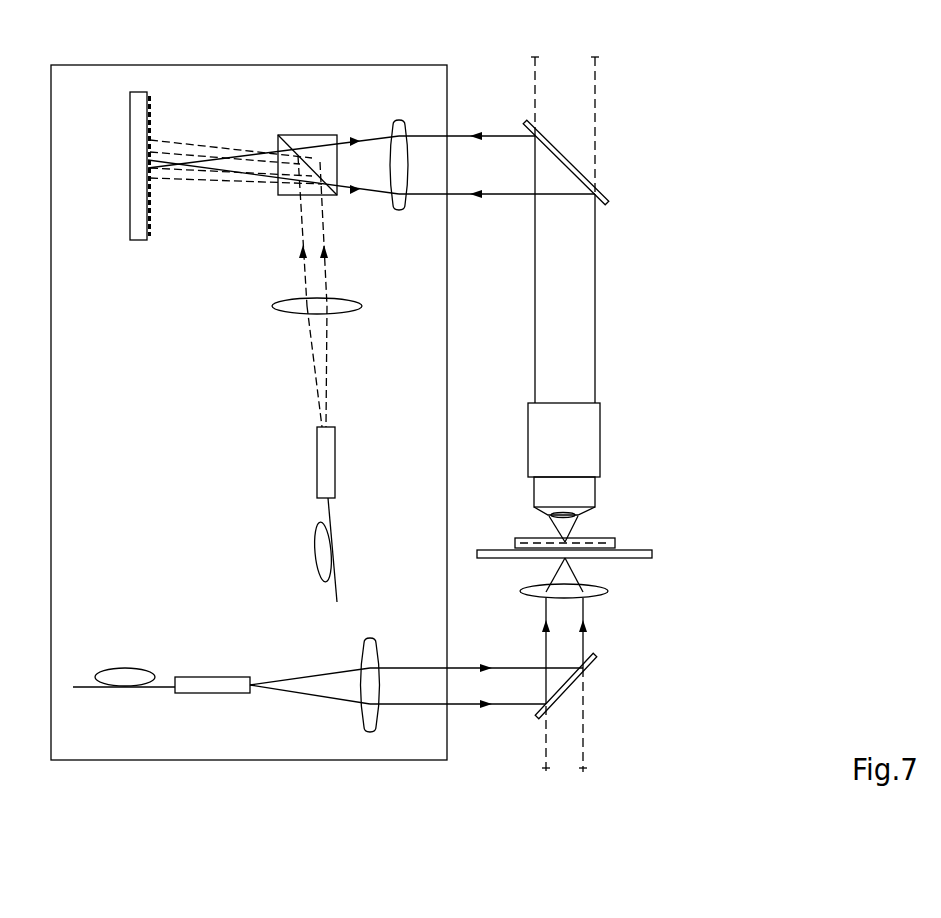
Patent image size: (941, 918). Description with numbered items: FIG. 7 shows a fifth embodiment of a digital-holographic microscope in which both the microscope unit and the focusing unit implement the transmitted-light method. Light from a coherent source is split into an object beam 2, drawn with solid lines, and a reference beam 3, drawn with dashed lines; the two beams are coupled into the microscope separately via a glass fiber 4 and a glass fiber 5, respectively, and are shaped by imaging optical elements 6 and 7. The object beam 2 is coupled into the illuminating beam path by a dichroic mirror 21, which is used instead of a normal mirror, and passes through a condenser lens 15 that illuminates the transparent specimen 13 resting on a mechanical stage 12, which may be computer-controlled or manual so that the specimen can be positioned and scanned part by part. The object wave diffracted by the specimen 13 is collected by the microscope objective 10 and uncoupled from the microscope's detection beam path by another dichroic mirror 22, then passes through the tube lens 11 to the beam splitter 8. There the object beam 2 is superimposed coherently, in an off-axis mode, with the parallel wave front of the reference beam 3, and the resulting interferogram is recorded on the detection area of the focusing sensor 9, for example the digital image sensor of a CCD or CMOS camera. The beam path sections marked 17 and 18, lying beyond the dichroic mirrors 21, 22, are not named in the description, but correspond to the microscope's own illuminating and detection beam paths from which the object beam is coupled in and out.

The object beam 2 is at (302, 675).
The reference beam 3 is at (318, 383).
The glass fiber 4 is at (190, 677).
The glass fiber 5 is at (320, 490).
The imaging optical element 6 is at (378, 650).
The imaging optical element 7 is at (282, 312).
The beam splitter 8 is at (307, 137).
The focusing sensor 9 is at (140, 242).
The microscope objective 10 is at (600, 418).
The tube lens 11 is at (403, 120).
The mechanical stage 12 is at (650, 550).
The transparent specimen 13 is at (607, 538).
The condenser lens 15 is at (608, 590).
The illumination beam 17 is at (548, 768).
The detection beam 18 is at (539, 62).
The dichroic mirror 21 is at (597, 667).
The dichroic mirror 22 is at (609, 197).